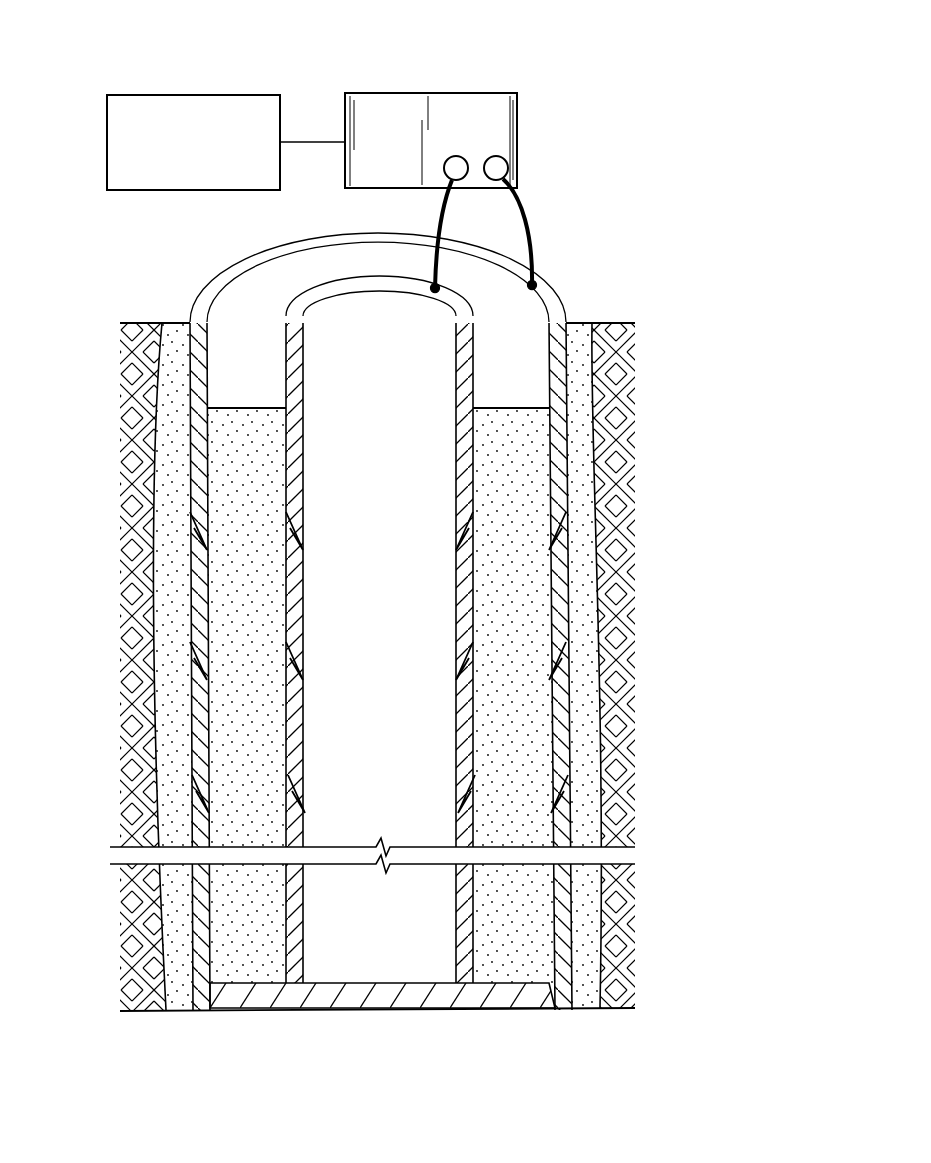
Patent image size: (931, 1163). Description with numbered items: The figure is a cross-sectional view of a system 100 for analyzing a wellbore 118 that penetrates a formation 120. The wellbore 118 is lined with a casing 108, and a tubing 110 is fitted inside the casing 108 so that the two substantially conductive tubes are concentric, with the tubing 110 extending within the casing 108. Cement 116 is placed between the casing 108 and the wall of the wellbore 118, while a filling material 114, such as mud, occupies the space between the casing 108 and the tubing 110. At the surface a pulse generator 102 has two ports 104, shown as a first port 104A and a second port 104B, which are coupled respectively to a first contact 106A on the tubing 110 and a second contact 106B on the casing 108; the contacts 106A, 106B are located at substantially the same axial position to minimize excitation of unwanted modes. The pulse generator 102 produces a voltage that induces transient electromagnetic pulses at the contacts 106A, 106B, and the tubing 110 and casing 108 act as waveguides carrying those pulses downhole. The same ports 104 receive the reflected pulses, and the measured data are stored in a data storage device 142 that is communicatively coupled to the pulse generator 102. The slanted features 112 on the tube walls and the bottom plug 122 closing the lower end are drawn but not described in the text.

The system 100 is at (688, 103).
The pulse generator 102 is at (494, 113).
The ports 104 is at (511, 127).
The first port 104A is at (455, 156).
The second port 104B is at (490, 157).
The first contact 106A is at (433, 293).
The second contact 106B is at (538, 273).
The casing 108 is at (557, 330).
The tubing 110 is at (463, 335).
The centralizers / attachment features 112 is at (300, 528).
The filling material 114 is at (265, 718).
The cement 116 is at (588, 915).
The wellbore 118 is at (189, 617).
The formation 120 is at (148, 440).
The bottom plug 122 is at (377, 997).
The data storage device 142 is at (216, 161).